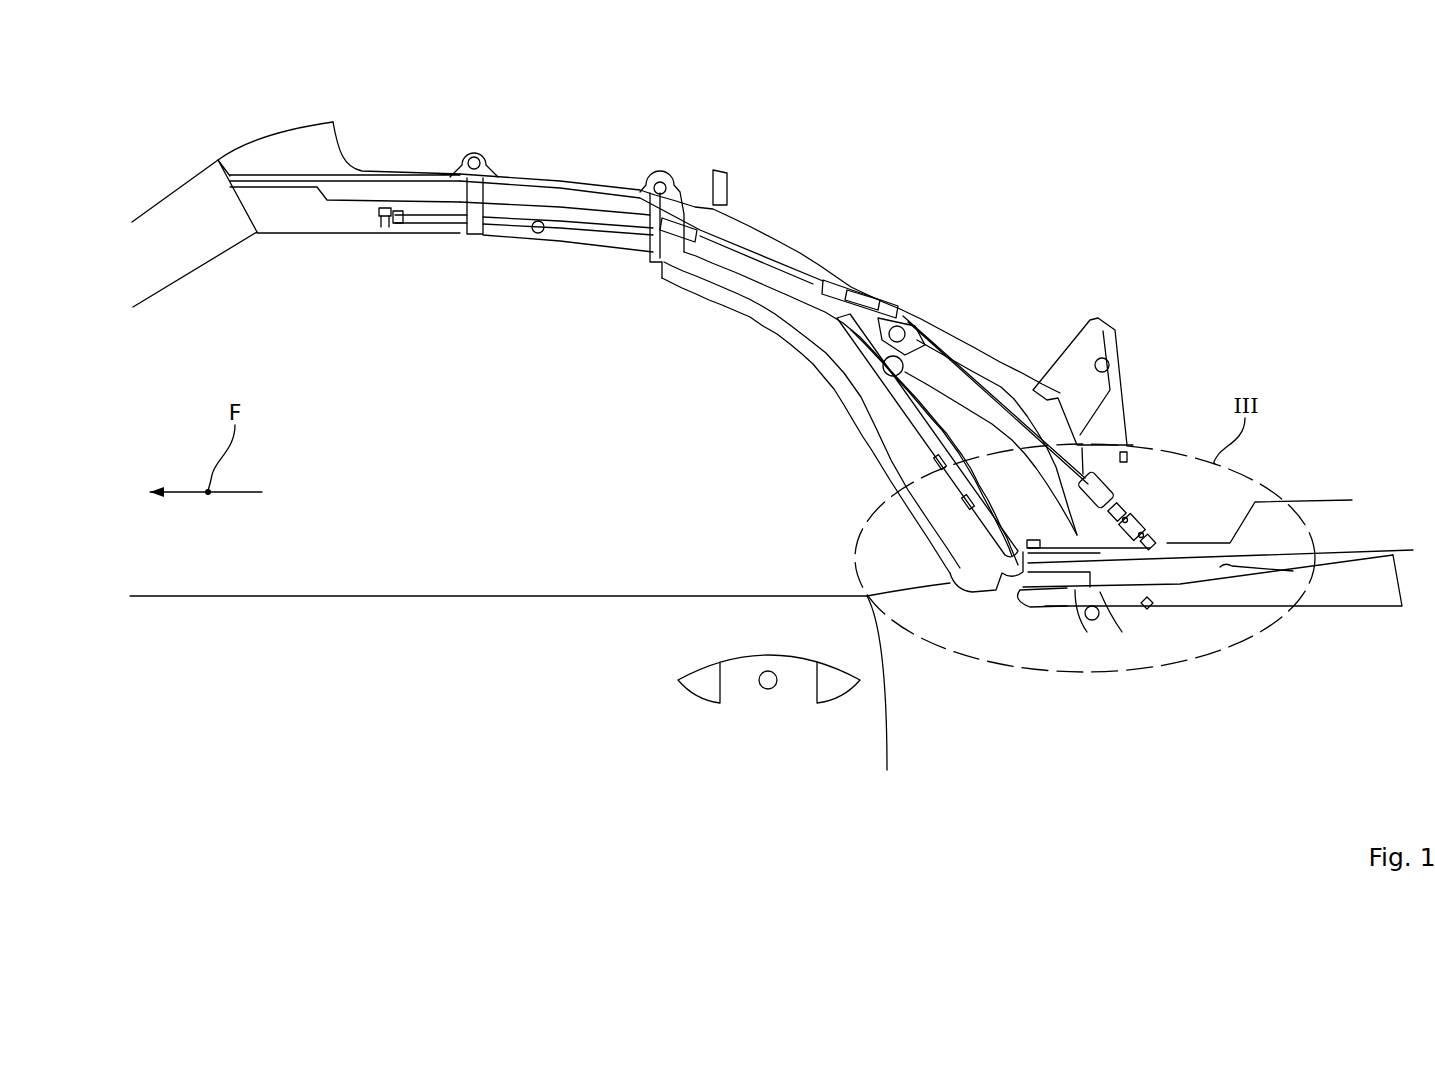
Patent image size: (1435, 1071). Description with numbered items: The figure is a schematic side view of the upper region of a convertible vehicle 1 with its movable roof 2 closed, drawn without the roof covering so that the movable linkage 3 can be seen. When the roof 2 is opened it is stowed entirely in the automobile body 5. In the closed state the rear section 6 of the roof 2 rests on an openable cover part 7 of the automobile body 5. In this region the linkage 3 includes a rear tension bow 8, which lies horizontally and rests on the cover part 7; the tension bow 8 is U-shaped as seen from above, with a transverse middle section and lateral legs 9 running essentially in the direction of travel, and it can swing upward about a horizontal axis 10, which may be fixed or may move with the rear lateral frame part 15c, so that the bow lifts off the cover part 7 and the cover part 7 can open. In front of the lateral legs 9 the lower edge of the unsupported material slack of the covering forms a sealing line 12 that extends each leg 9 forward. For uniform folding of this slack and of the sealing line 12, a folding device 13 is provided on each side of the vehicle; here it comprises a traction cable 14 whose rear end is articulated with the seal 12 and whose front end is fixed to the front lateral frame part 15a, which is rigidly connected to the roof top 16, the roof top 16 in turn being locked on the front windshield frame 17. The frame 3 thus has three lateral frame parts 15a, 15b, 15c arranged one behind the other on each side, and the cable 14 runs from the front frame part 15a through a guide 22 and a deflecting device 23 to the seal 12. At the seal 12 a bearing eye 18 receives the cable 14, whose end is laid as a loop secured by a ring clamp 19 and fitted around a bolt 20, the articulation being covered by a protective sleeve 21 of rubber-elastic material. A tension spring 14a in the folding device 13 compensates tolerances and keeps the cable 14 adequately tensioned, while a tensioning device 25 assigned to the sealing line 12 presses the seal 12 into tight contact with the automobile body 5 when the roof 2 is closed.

The convertible vehicle 1 is at (1097, 203).
The movable roof 2 is at (940, 222).
The movable linkage 3 is at (875, 480).
The automobile body 5 is at (450, 595).
The rear section of the roof 6 is at (1282, 455).
The openable cover part 7 is at (1353, 567).
The rear tension bow 8 is at (1323, 528).
The lateral legs 9 is at (1263, 521).
The horizontal axis 10 is at (990, 589).
The sealing line 12 is at (1182, 547).
The folding device 13 is at (985, 362).
The traction cable 14 is at (508, 217).
The tension spring 14a is at (1112, 537).
The front lateral frame part 15a is at (432, 234).
The middle lateral frame part 15b is at (587, 250).
The rear lateral frame part 15c is at (721, 291).
The roof top 16 is at (348, 172).
The front windshield frame 17 is at (185, 197).
The bearing eye 18 is at (1155, 537).
The ring clamp 19 is at (1128, 481).
The bolt 20 is at (1120, 553).
The protective sleeve 21 is at (1110, 478).
The guide 22 is at (677, 223).
The deflecting device 23 is at (845, 283).
The tensioning device 25 is at (1190, 582).